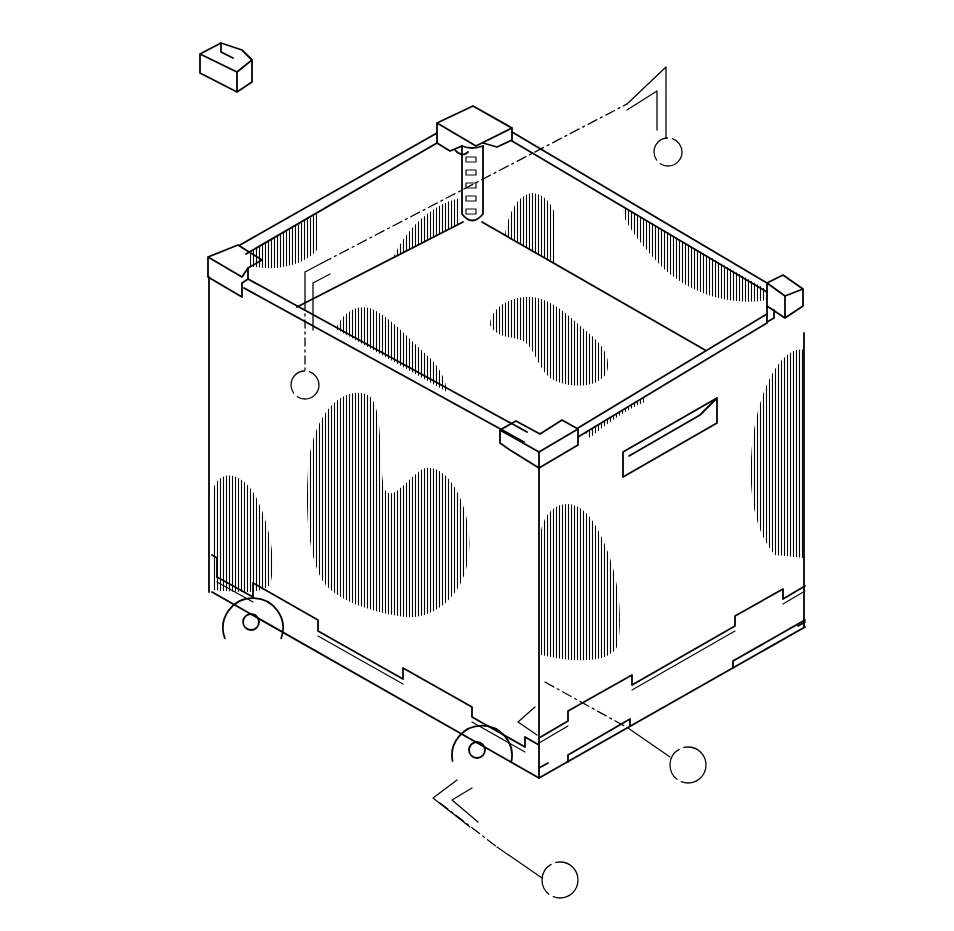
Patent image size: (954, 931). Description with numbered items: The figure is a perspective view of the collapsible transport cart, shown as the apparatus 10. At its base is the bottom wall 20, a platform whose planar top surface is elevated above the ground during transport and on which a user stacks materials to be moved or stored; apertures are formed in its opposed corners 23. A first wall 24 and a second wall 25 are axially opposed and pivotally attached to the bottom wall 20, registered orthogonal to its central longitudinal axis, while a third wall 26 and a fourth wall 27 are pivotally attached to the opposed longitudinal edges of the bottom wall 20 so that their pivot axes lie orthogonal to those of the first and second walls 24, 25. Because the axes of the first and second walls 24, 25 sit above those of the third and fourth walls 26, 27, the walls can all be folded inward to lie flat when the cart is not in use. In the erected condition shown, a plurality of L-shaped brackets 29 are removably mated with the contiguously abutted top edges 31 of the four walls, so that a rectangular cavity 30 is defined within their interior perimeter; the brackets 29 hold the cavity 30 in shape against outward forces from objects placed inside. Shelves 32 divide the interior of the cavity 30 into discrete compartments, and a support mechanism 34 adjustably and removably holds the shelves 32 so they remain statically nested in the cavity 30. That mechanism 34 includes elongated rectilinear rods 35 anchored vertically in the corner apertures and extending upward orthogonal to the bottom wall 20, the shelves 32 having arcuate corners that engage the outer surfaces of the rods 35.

The apparatus 10 is at (923, 104).
The bottom wall 20 is at (372, 677).
The opposed corners 23 is at (212, 608).
The first wall 24 is at (800, 425).
The second wall 25 is at (365, 197).
The third wall 26 is at (225, 440).
The fourth wall 27 is at (692, 277).
The L-shaped brackets 29 is at (203, 72).
The rectangular cavity 30 is at (634, 295).
The top edges 31 is at (303, 213).
The shelves 32 is at (568, 303).
The support mechanism 34 is at (488, 221).
The rods 35 is at (462, 154).